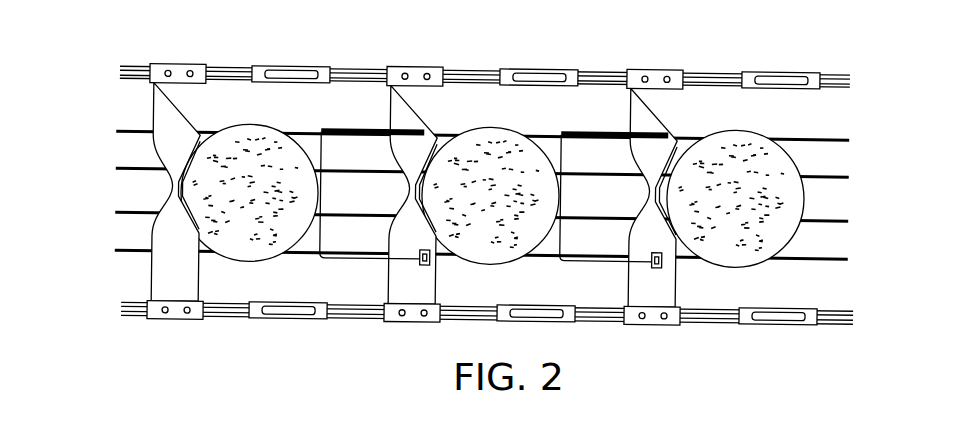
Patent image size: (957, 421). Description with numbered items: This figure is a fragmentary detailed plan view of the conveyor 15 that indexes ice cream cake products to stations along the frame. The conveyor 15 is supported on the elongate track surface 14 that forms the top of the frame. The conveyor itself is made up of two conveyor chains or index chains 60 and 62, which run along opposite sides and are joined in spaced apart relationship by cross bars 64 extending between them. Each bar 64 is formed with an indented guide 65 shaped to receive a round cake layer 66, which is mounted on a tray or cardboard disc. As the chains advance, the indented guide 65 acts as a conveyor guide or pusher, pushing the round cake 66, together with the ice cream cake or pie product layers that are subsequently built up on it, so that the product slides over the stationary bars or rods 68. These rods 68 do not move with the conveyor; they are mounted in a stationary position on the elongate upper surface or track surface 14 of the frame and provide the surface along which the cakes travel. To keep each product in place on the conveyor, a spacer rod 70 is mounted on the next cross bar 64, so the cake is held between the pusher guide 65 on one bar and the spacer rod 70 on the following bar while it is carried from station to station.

The elongate track surface 14 is at (329, 291).
The conveyor 15 is at (326, 338).
The conveyor chain 60 is at (355, 71).
The conveyor chain 62 is at (362, 314).
The bar 64 is at (190, 104).
The indented guide 65 is at (426, 172).
The round cake layer 66 is at (497, 142).
The stationary rods 68 is at (836, 178).
The spacer rod 70 is at (598, 130).